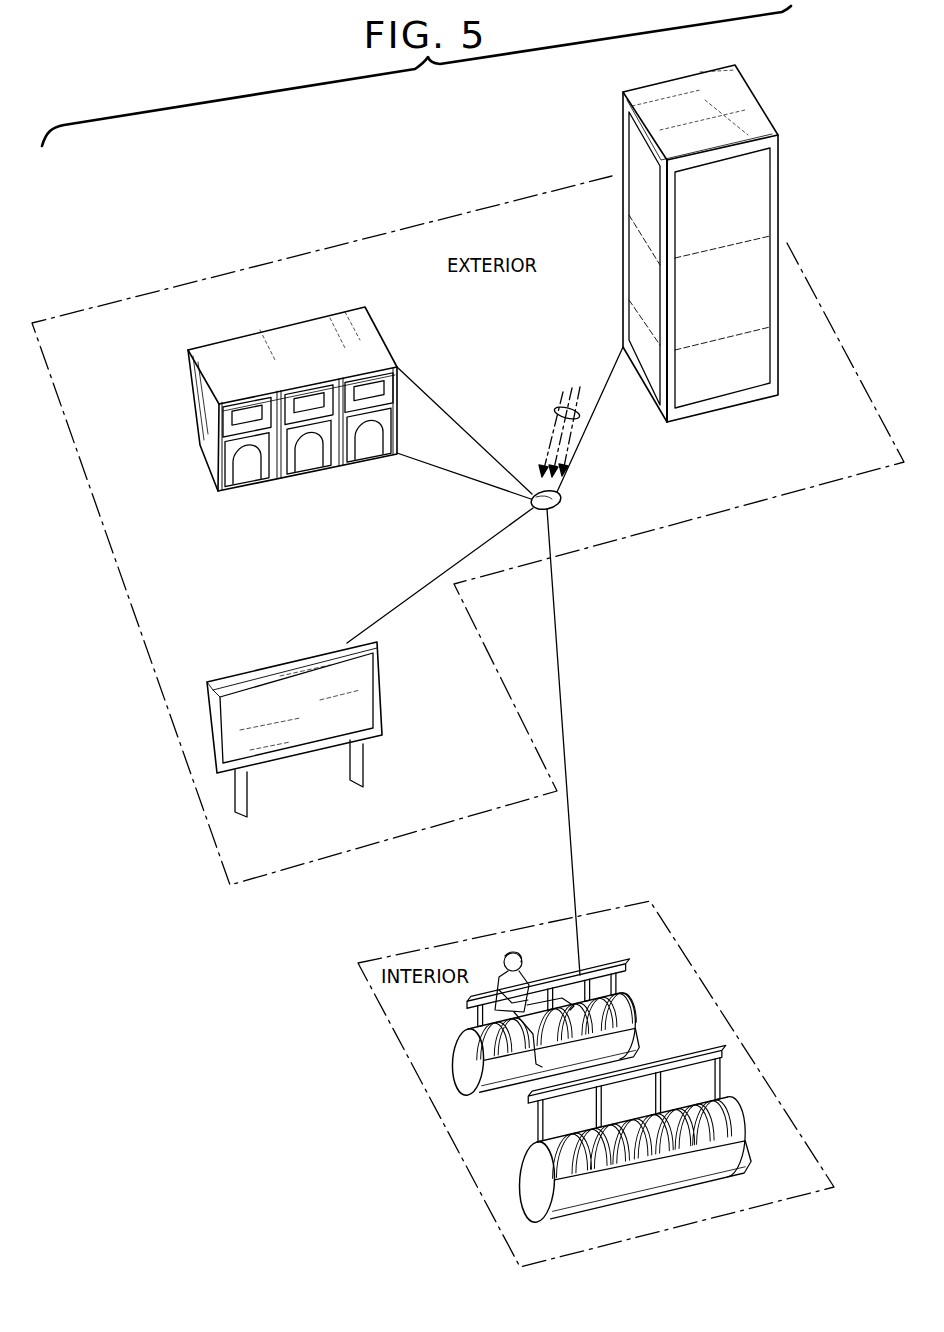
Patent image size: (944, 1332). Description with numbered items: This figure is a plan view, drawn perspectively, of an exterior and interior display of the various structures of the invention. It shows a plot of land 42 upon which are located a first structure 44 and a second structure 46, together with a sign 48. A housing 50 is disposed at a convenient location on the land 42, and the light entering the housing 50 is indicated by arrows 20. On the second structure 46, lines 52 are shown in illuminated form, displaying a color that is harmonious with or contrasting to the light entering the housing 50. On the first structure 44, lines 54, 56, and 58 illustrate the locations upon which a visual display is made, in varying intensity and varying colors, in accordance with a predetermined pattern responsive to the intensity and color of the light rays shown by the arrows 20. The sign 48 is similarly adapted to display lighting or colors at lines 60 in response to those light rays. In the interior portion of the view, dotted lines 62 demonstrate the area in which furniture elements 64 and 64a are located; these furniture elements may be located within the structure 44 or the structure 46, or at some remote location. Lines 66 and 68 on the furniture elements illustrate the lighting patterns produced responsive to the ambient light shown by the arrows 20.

The arrows 20 is at (556, 412).
The plot of land 42 is at (506, 200).
The structure 44 is at (285, 403).
The structure 46 is at (733, 243).
The sign 48 is at (321, 711).
The housing 50 is at (562, 498).
The lines 52 is at (670, 293).
The lines 54 is at (297, 463).
The lines 56 is at (290, 410).
The lines 58 is at (292, 405).
The lines 60 is at (377, 688).
The dotted lines 62 is at (698, 1230).
The furniture element 64 is at (630, 1013).
The furniture element 64a is at (727, 1110).
The lines 66 is at (466, 1063).
The lines 68 is at (532, 1186).